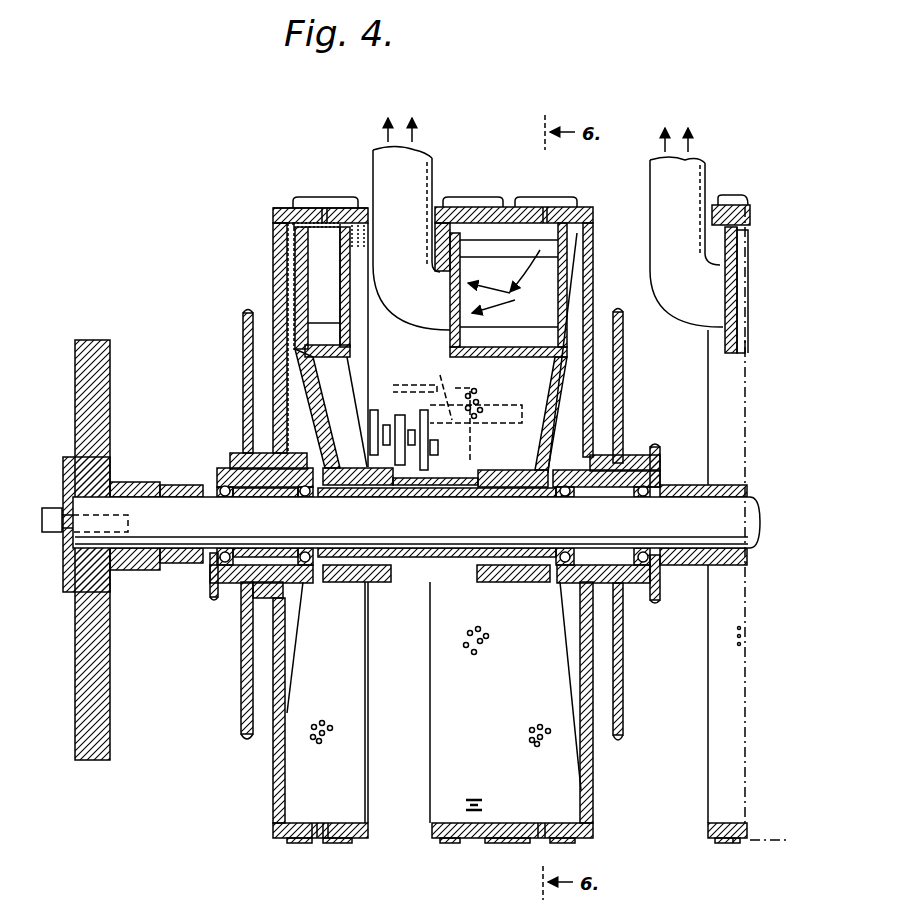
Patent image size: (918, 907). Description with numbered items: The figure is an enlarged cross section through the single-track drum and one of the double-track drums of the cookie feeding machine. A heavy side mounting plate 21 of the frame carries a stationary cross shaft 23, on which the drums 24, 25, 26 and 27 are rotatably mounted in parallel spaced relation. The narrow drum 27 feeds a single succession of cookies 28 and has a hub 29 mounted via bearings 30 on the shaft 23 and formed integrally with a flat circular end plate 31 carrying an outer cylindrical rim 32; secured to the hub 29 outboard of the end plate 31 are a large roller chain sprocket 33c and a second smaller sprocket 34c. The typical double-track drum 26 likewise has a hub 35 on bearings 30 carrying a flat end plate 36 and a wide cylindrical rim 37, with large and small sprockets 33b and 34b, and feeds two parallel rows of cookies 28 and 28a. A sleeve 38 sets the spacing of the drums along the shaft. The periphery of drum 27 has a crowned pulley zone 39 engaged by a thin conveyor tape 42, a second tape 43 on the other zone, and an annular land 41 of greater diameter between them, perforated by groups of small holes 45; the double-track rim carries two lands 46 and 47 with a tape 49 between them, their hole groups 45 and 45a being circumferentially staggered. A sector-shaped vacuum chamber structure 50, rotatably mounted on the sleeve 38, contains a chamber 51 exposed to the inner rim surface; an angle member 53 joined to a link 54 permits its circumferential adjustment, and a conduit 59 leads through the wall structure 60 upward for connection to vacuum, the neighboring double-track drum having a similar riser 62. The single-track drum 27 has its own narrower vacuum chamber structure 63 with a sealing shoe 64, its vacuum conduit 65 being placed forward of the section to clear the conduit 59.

The side mounting plate 21 is at (112, 393).
The stationary cross shaft 23 is at (142, 497).
The drum 24 is at (255, 822).
The drum 25 is at (698, 810).
The drum 26 is at (595, 210).
The drum 27 is at (270, 216).
The product article 28 is at (320, 207).
The product article 28a is at (475, 207).
The hub 29 is at (272, 489).
The bearing 30 is at (225, 497).
The end plate 31 is at (272, 268).
The cylindrical rim 32 is at (375, 823).
The sprocket 33b is at (628, 688).
The roller chain sprocket 33c is at (243, 652).
The sprocket 34b is at (660, 603).
The sprocket 34c is at (214, 604).
The hub 35 is at (635, 455).
The end plate 36 is at (595, 790).
The cylindrical rim 37 is at (445, 215).
The sleeve 38 is at (398, 490).
The pulley zone 39 is at (283, 208).
The annular land 41 is at (328, 205).
The conveyor tape 42 is at (298, 846).
The conveyor tape 43 is at (348, 846).
The holes 45 is at (323, 207).
The holes 45a is at (472, 652).
The land 46 is at (352, 220).
The land 47 is at (473, 842).
The tape 49 is at (500, 846).
The vacuum chamber structure 50 is at (598, 283).
The chamber 51 is at (590, 266).
The angle member 53 is at (430, 380).
The link 54 is at (404, 420).
The conduit 59 is at (430, 165).
The wall structure 60 is at (504, 281).
The riser 62 is at (668, 300).
The vacuum chamber structure 63 is at (296, 290).
The sealing shoe 64 is at (286, 232).
The vacuum conduit 65 is at (322, 333).